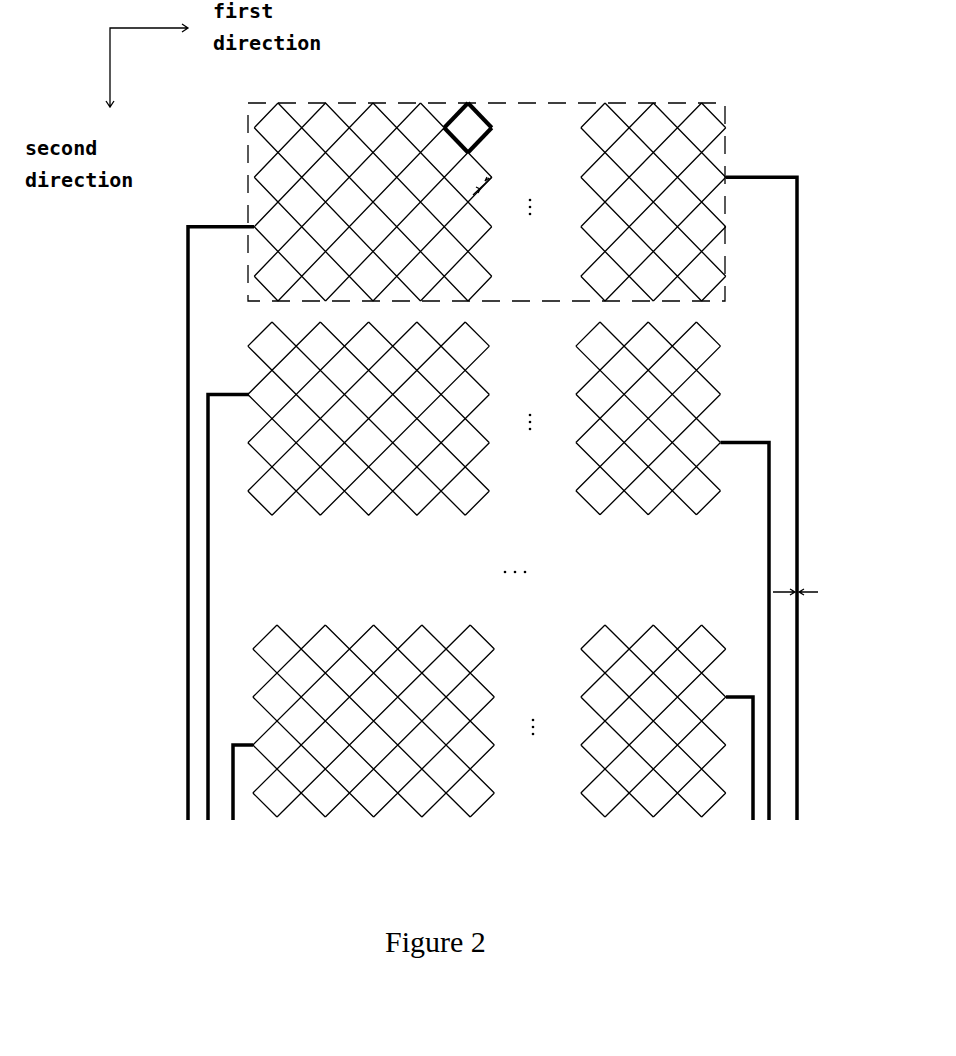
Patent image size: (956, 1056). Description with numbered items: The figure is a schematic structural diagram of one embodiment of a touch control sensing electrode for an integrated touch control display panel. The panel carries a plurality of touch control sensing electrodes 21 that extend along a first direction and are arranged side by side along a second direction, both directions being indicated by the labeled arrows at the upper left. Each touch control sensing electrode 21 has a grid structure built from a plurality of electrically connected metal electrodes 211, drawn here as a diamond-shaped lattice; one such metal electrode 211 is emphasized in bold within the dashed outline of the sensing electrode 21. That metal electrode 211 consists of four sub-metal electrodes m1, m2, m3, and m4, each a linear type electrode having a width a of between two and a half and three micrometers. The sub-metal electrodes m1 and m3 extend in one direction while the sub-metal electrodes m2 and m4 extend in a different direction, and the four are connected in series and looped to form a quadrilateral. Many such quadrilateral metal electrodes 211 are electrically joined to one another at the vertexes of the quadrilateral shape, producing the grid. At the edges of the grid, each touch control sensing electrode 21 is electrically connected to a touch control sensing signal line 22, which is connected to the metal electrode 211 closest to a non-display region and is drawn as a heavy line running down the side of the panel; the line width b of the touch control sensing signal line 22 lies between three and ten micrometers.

The touch control sensing electrode 21 is at (584, 102).
The metal electrode 211 is at (474, 132).
The sub-metal electrode m1 is at (456, 112).
The sub-metal electrode m2 is at (479, 110).
The sub-metal electrode m3 is at (485, 146).
The sub-metal electrode m4 is at (460, 146).
The touch control sensing signal line 22 is at (799, 562).
The width of sub-metal electrode a is at (490, 191).
The line width of touch control sensing signal line b is at (796, 602).